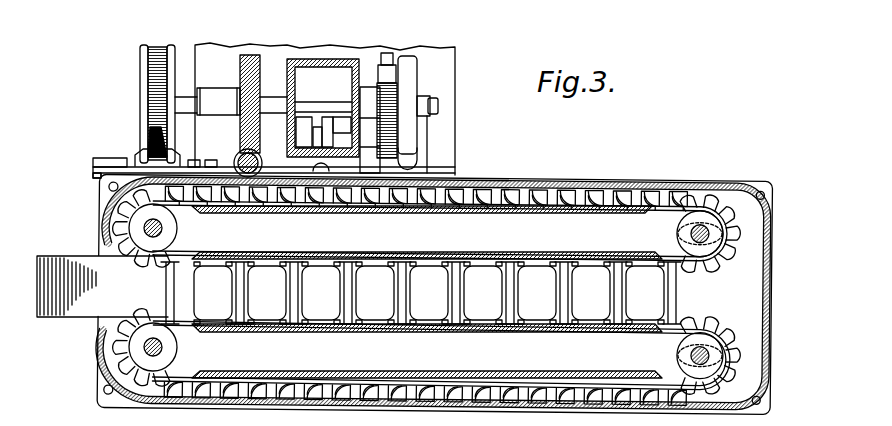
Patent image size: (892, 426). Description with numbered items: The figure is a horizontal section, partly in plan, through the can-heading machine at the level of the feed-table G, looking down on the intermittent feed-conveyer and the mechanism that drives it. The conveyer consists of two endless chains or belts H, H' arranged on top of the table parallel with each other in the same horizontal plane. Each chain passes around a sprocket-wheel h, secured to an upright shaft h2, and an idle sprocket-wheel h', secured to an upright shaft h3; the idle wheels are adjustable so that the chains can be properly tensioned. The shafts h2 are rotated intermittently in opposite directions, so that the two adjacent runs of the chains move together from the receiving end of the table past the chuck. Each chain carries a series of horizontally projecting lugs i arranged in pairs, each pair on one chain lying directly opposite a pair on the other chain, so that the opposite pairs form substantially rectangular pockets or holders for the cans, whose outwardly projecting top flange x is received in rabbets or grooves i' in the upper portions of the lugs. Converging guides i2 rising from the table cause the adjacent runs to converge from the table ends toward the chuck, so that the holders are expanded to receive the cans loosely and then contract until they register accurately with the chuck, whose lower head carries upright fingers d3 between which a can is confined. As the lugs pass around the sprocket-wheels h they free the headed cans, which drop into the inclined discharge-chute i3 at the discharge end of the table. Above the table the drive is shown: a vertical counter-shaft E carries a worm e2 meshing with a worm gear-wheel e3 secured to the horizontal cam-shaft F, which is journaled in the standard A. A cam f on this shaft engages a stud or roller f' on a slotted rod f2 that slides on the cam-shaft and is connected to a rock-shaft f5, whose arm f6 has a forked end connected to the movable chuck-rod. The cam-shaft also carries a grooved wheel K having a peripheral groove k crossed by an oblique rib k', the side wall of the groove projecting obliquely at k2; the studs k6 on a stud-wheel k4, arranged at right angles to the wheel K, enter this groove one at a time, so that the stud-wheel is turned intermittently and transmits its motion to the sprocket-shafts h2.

The feed-table G is at (433, 294).
The conveyer chain H is at (440, 205).
The conveyer chain H' is at (441, 363).
The sprocket-wheel h is at (118, 288).
The idle sprocket-wheel h' is at (716, 295).
The sprocket shaft h2 is at (163, 233).
The idle sprocket shaft h3 is at (679, 237).
The lugs i is at (439, 277).
The rabbets i' is at (479, 189).
The converging guides i2 is at (446, 256).
The discharge-chute i3 is at (102, 286).
The upright fingers d3 is at (321, 293).
The top flange x is at (429, 293).
The grooved wheel K is at (140, 83).
The peripheral groove k is at (139, 133).
The oblique rib k' is at (132, 147).
The oblique wall portion k2 is at (177, 151).
The stud-wheel k4 is at (93, 169).
The studs k6 is at (99, 179).
The cam-shaft F is at (182, 100).
The vertical counter-shaft E is at (240, 156).
The worm e2 is at (258, 161).
The worm gear-wheel e3 is at (325, 96).
The standard A is at (300, 69).
The rock-shaft f5 is at (300, 133).
The rock-arm f6 is at (310, 164).
The stud or roller f' is at (381, 56).
The slide-rod f2 is at (412, 81).
The cam f is at (425, 120).